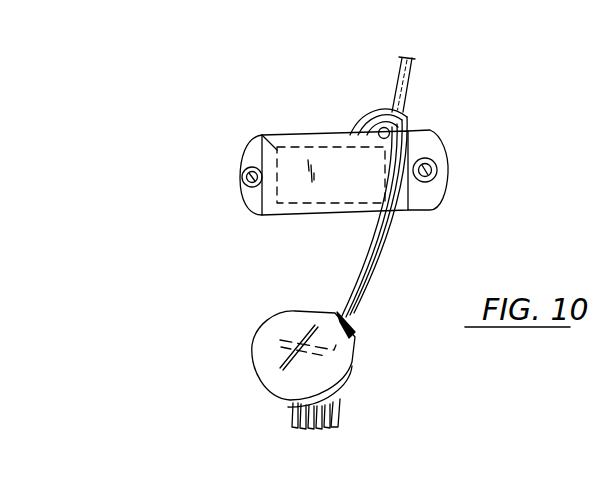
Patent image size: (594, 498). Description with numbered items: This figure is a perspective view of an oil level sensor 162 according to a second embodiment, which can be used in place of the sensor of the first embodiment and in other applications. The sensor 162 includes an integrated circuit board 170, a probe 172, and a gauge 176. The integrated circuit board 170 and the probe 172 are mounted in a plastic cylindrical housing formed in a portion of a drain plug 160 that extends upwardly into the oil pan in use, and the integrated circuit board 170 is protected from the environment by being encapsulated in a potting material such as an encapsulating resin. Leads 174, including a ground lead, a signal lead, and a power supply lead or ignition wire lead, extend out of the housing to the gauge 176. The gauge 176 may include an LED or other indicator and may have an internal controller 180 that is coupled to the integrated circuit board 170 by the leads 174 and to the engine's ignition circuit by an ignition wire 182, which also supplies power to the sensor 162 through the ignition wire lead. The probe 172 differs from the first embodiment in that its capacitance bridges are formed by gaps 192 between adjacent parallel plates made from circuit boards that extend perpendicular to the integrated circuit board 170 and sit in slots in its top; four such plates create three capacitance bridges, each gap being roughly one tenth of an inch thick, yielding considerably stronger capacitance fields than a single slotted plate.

The drain plug 160 is at (251, 367).
The sensor 162 is at (295, 381).
The integrated circuit board 170 is at (351, 342).
The probe 172 is at (313, 424).
The leads 174 is at (378, 265).
The gauge 176 is at (322, 62).
The internal controller 180 is at (261, 135).
The ignition wire 182 is at (415, 79).
The gaps 192 is at (328, 429).